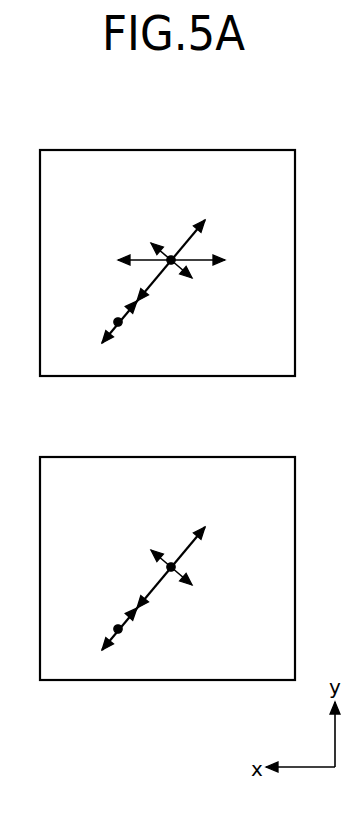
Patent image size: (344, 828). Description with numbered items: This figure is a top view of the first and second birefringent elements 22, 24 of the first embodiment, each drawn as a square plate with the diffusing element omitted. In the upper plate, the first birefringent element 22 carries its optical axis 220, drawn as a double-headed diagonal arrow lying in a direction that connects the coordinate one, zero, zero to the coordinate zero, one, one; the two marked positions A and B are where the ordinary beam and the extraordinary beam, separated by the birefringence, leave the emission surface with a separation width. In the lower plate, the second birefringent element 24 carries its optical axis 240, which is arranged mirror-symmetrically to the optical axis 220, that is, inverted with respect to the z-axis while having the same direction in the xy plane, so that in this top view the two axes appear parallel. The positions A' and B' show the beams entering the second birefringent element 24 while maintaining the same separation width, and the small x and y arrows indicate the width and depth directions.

The first birefringent element 22 is at (222, 150).
The second birefringent element 24 is at (222, 457).
The optical axis 220 is at (181, 247).
The optical axis 240 is at (148, 571).